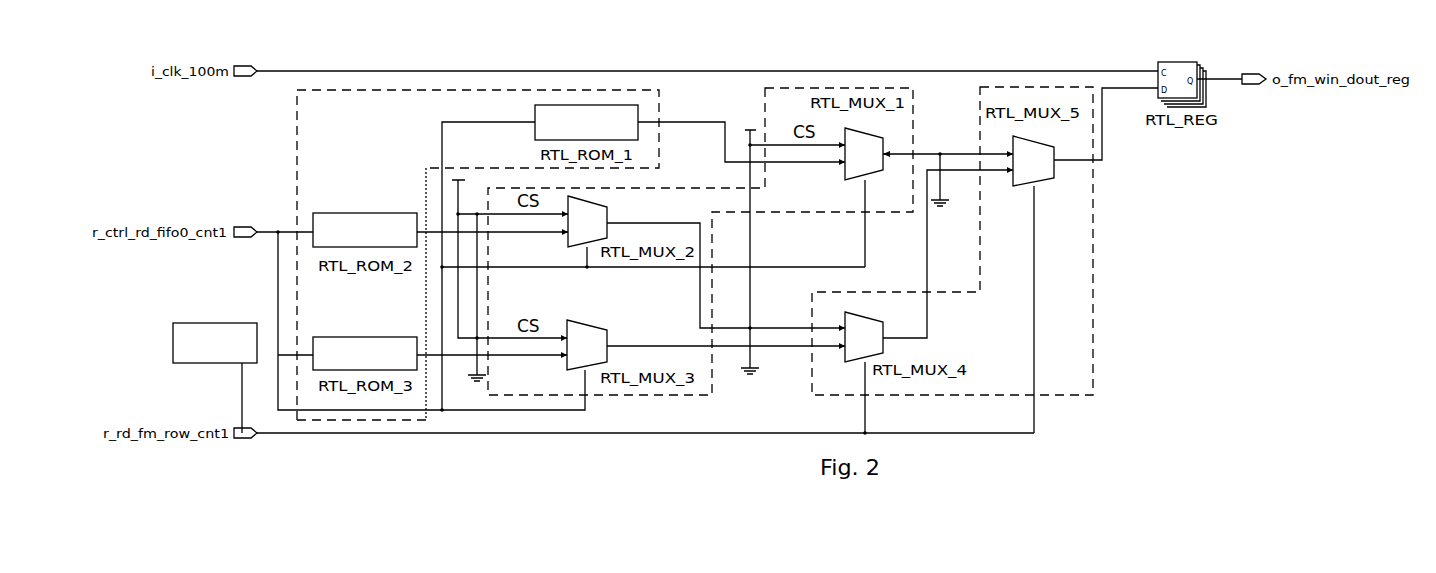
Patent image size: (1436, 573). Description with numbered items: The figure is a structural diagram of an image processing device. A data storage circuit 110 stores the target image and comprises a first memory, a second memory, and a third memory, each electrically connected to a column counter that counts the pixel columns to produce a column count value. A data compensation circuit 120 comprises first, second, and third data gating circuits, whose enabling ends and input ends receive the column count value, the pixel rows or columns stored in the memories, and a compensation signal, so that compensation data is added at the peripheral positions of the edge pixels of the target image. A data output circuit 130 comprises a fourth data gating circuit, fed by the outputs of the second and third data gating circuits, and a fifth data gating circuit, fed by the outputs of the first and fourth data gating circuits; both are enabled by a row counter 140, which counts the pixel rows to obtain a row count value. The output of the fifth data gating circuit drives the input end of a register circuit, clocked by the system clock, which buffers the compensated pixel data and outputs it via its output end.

The data storage circuit 110 is at (297, 155).
The data compensation circuit 120 is at (913, 120).
The data output circuit 130 is at (1095, 268).
The row counter 140 is at (168, 338).